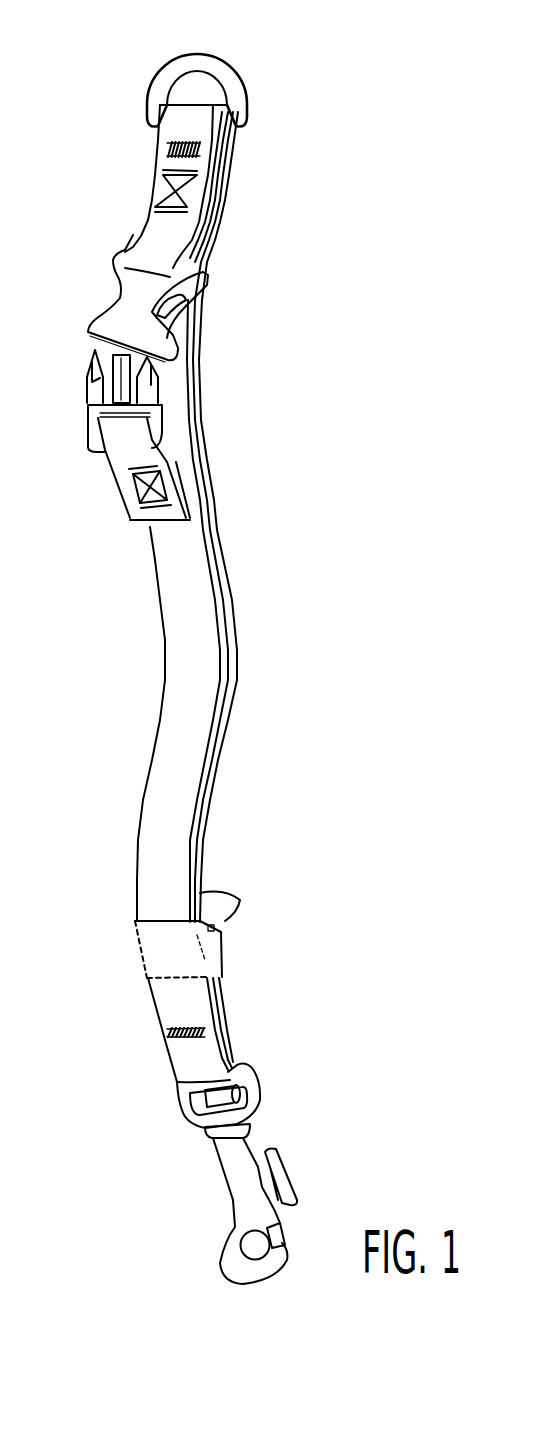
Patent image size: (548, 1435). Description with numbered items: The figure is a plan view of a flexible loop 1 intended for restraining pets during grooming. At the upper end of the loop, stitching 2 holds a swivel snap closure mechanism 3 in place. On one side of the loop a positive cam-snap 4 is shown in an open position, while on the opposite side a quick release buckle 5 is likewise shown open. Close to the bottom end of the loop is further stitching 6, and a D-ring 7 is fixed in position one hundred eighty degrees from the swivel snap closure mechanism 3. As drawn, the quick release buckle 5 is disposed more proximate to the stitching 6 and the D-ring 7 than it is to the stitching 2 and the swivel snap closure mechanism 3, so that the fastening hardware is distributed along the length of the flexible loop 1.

The flexible loop 1 is at (158, 725).
The stitching 2 is at (168, 1035).
The swivel snap closure mechanism 3 is at (180, 1117).
The positive cam-snap 4 is at (148, 945).
The quick release buckle 5 is at (88, 326).
The stitching 6 is at (170, 147).
The D-ring 7 is at (150, 92).